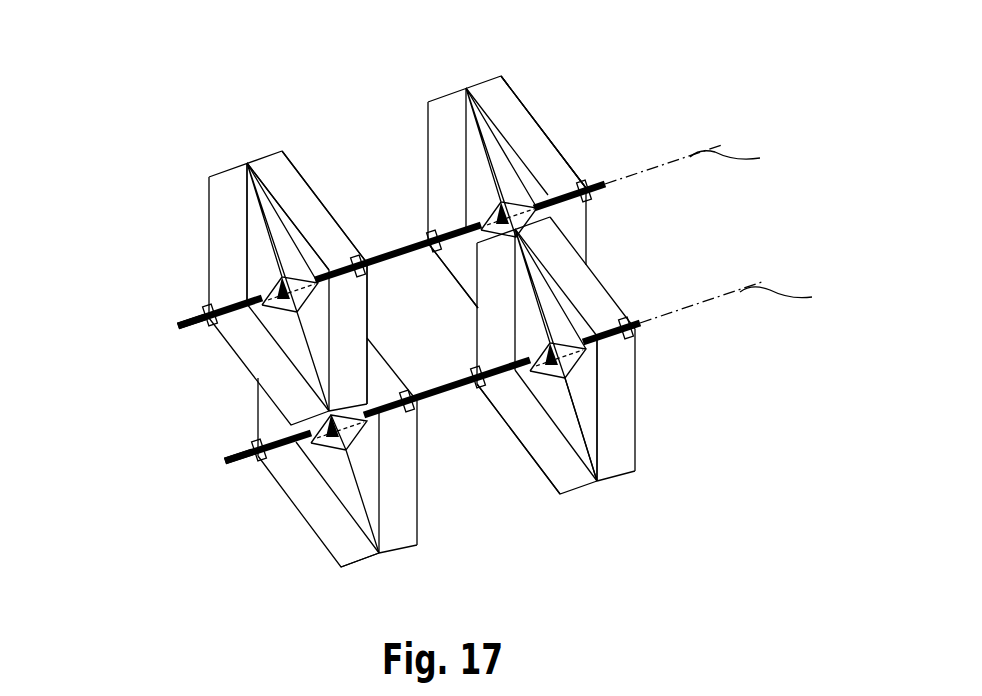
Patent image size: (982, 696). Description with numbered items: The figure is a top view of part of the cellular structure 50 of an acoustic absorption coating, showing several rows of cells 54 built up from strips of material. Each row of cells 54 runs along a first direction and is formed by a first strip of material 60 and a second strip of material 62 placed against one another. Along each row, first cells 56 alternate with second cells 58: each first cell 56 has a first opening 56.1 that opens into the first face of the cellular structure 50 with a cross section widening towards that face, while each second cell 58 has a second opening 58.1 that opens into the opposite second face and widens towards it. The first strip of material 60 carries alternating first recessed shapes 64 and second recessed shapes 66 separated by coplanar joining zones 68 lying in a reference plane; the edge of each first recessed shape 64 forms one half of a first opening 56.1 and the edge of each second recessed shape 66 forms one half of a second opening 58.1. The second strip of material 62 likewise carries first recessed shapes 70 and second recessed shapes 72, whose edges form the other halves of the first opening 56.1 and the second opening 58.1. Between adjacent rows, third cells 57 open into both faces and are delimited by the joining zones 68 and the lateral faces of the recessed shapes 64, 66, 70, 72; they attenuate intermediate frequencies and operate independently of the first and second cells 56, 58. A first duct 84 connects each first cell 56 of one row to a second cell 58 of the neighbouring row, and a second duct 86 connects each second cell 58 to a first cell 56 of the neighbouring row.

The cellular structure 50 is at (147, 172).
The row of cells 54 is at (163, 329).
The first cell 56 is at (204, 224).
The first opening 56.1 is at (300, 190).
The third cell 57 is at (412, 366).
The second cell 58 is at (538, 100).
The second opening 58.1 is at (552, 140).
The first strip of material 60 is at (187, 314).
The second strip of material 62 is at (185, 344).
The first recessed shape 64 is at (302, 193).
The second recessed shape 66 is at (527, 80).
The joining zone 68 is at (410, 226).
The first recessed shape 70 is at (372, 290).
The second recessed shape 72 is at (610, 224).
The first duct 84 is at (243, 202).
The second duct 86 is at (572, 484).